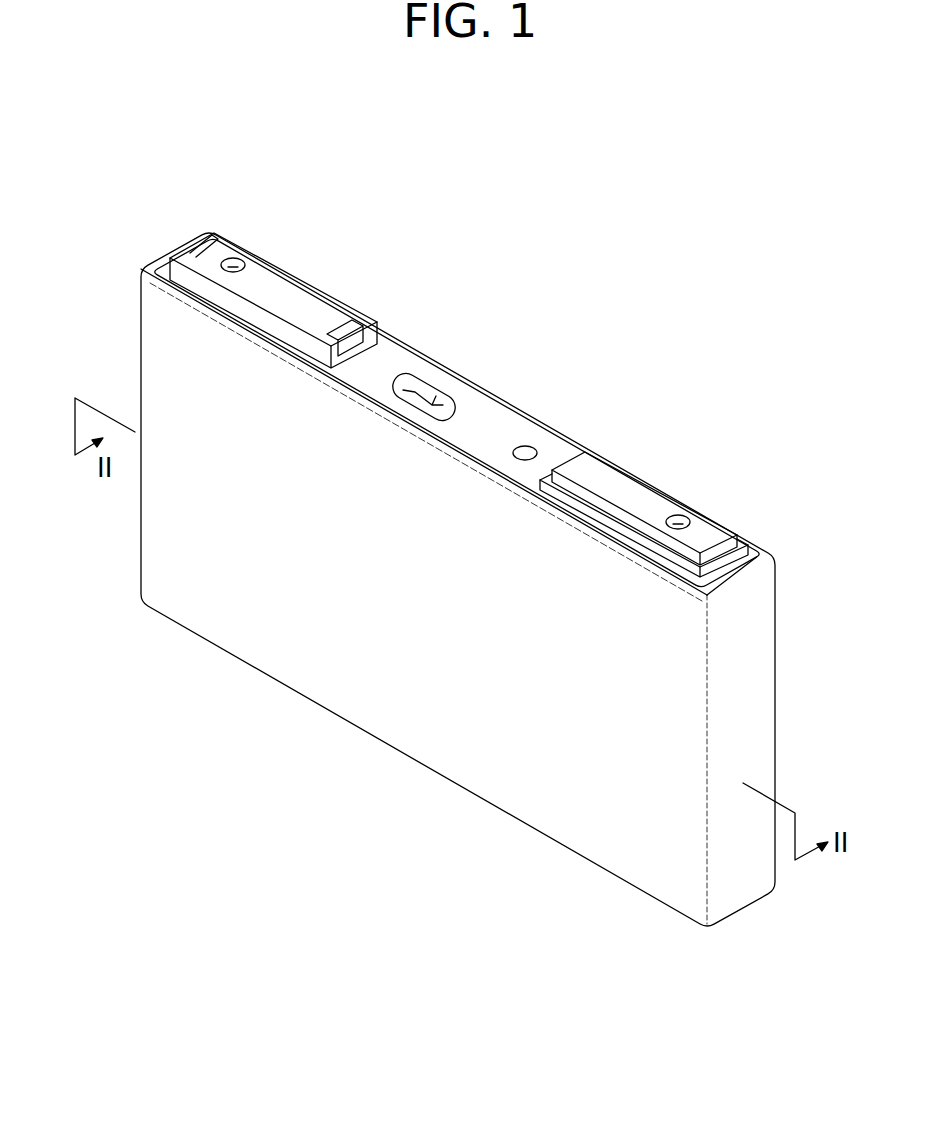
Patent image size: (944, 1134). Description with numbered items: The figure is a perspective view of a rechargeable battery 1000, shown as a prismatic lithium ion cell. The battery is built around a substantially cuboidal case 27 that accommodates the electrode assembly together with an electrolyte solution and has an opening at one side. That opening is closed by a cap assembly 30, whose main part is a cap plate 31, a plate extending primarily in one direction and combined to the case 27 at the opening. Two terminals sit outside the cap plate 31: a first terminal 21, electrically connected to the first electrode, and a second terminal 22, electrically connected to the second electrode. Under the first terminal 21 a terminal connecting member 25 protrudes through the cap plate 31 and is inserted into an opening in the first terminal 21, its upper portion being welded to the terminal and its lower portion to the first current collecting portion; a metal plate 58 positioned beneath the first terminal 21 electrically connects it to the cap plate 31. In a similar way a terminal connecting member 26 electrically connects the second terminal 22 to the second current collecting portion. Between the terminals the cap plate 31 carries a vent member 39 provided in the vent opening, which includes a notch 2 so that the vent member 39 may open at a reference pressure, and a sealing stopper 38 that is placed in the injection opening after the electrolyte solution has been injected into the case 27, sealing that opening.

The rechargeable battery 1000 is at (532, 183).
The case 27 is at (363, 695).
The cap assembly 30 is at (503, 406).
The cap plate 31 is at (392, 357).
The vent member 39 is at (422, 380).
The notch 2 is at (432, 403).
The sealing stopper 38 is at (525, 447).
The second terminal 22 is at (273, 280).
The terminal connecting member 26 is at (234, 258).
The first terminal 21 is at (622, 485).
The terminal connecting member 25 is at (678, 515).
The metal plate 58 is at (720, 563).